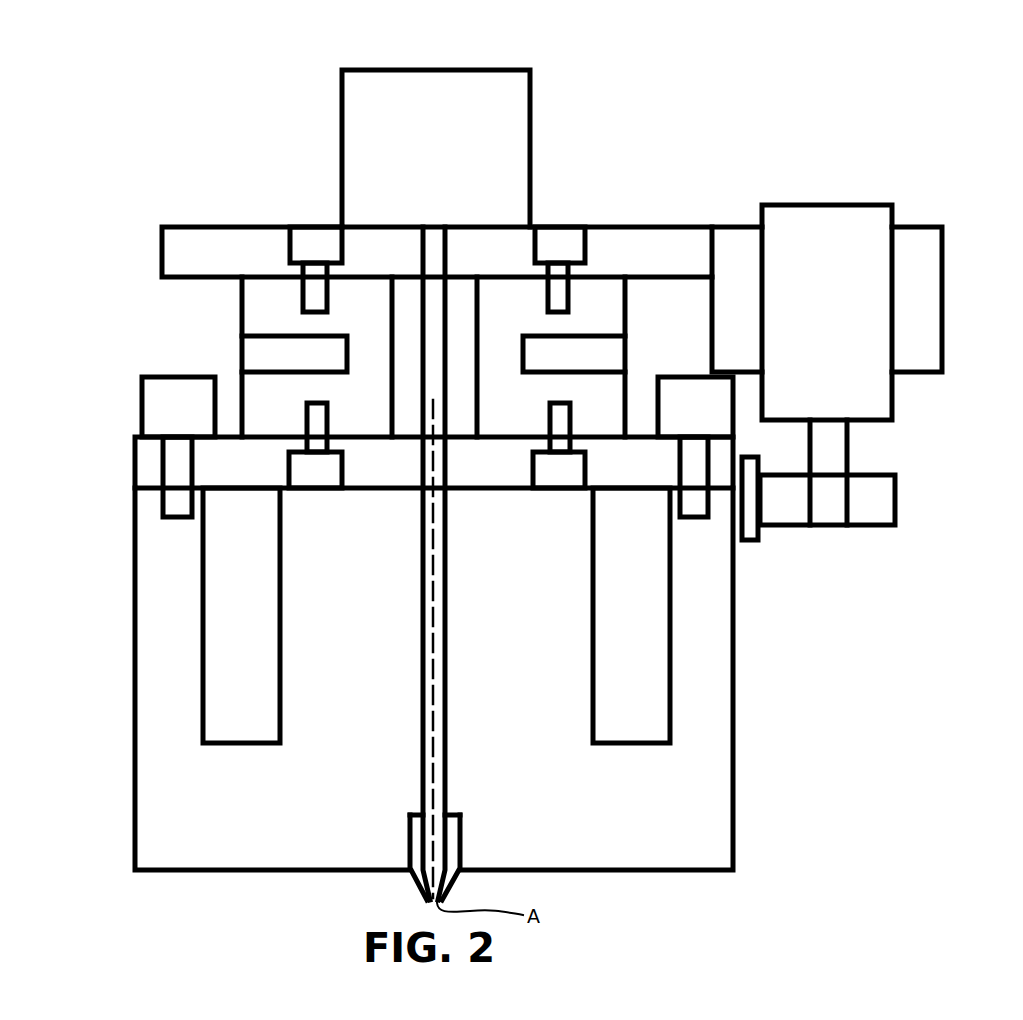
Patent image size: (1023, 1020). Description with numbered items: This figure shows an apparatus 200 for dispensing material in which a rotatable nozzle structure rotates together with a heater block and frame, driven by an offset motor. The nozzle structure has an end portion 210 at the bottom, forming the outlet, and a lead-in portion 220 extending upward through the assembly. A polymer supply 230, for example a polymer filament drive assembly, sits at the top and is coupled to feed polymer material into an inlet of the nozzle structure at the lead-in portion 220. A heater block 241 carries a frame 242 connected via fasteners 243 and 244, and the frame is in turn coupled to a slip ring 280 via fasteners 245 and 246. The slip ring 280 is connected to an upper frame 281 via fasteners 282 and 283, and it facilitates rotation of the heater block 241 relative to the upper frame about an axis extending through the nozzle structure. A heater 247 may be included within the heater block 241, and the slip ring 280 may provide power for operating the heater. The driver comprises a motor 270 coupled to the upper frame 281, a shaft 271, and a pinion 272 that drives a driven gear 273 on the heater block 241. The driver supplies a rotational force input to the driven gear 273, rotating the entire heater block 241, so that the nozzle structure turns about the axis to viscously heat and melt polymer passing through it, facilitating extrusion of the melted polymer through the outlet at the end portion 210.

The apparatus 200 is at (926, 66).
The end portion 210 is at (448, 893).
The lead-in portion 220 is at (446, 720).
The polymer supply 230 is at (452, 70).
The heater block 241 is at (736, 620).
The frame 242 is at (135, 465).
The fastener 243 is at (155, 377).
The fastener 244 is at (686, 377).
The fastener 245 is at (318, 490).
The fastener 246 is at (556, 490).
The heater 247 is at (648, 680).
The motor 270 is at (890, 213).
The shaft 271 is at (822, 527).
The pinion 272 is at (887, 527).
The driven gear 273 is at (752, 540).
The slip ring 280 is at (242, 306).
The upper frame 281 is at (627, 227).
The fastener 282 is at (313, 227).
The fastener 283 is at (557, 227).